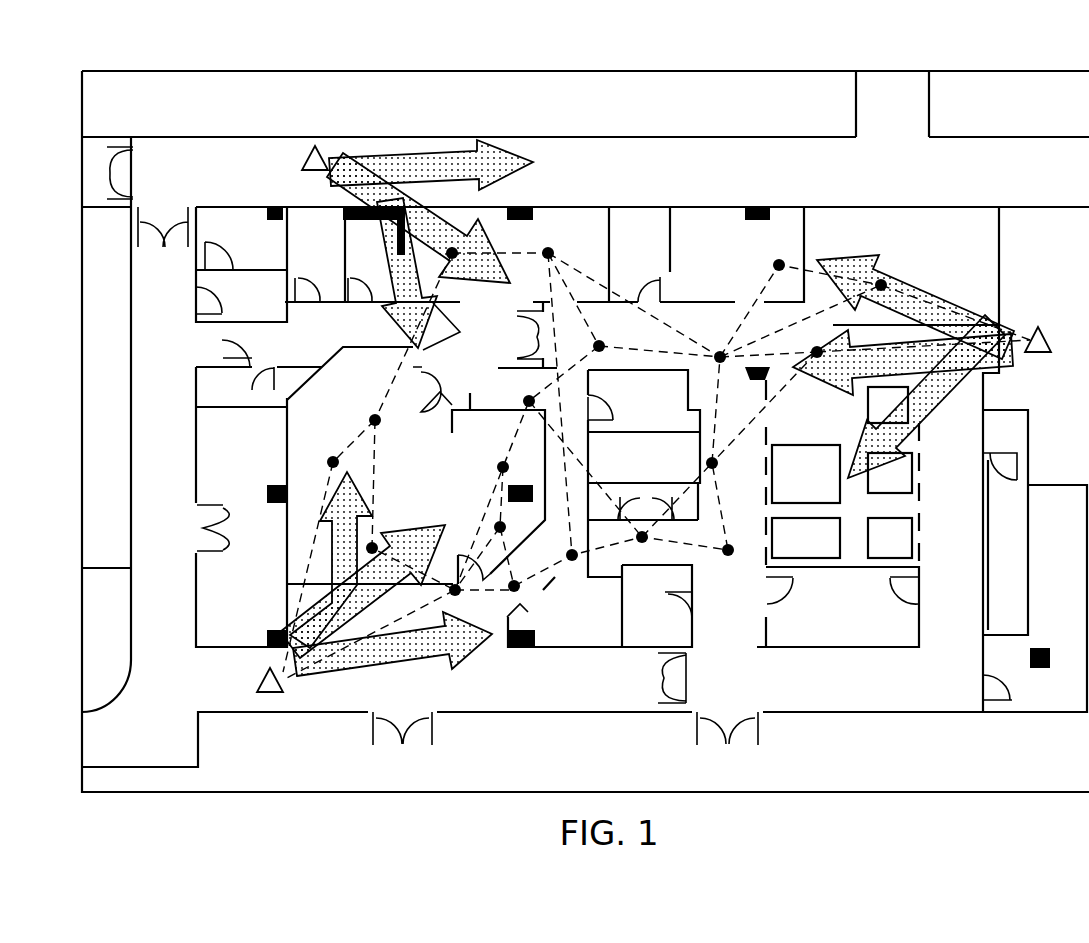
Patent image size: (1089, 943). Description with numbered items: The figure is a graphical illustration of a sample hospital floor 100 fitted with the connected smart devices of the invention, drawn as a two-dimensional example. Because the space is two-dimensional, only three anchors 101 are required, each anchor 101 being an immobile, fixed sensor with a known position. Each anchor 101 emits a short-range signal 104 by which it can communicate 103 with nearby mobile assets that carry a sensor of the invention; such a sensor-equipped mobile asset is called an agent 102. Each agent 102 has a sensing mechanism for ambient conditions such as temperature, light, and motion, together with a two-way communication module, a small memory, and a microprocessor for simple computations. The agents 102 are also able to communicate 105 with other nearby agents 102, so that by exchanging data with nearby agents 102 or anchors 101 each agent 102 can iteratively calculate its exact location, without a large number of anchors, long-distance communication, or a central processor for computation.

The hospital floor 100 is at (426, 70).
The anchor 101 is at (320, 152).
The agent 102 is at (546, 256).
The communication with nearby mobile assets 103 is at (952, 318).
The short-range signal 104 is at (488, 150).
The communication between agents 105 is at (833, 262).